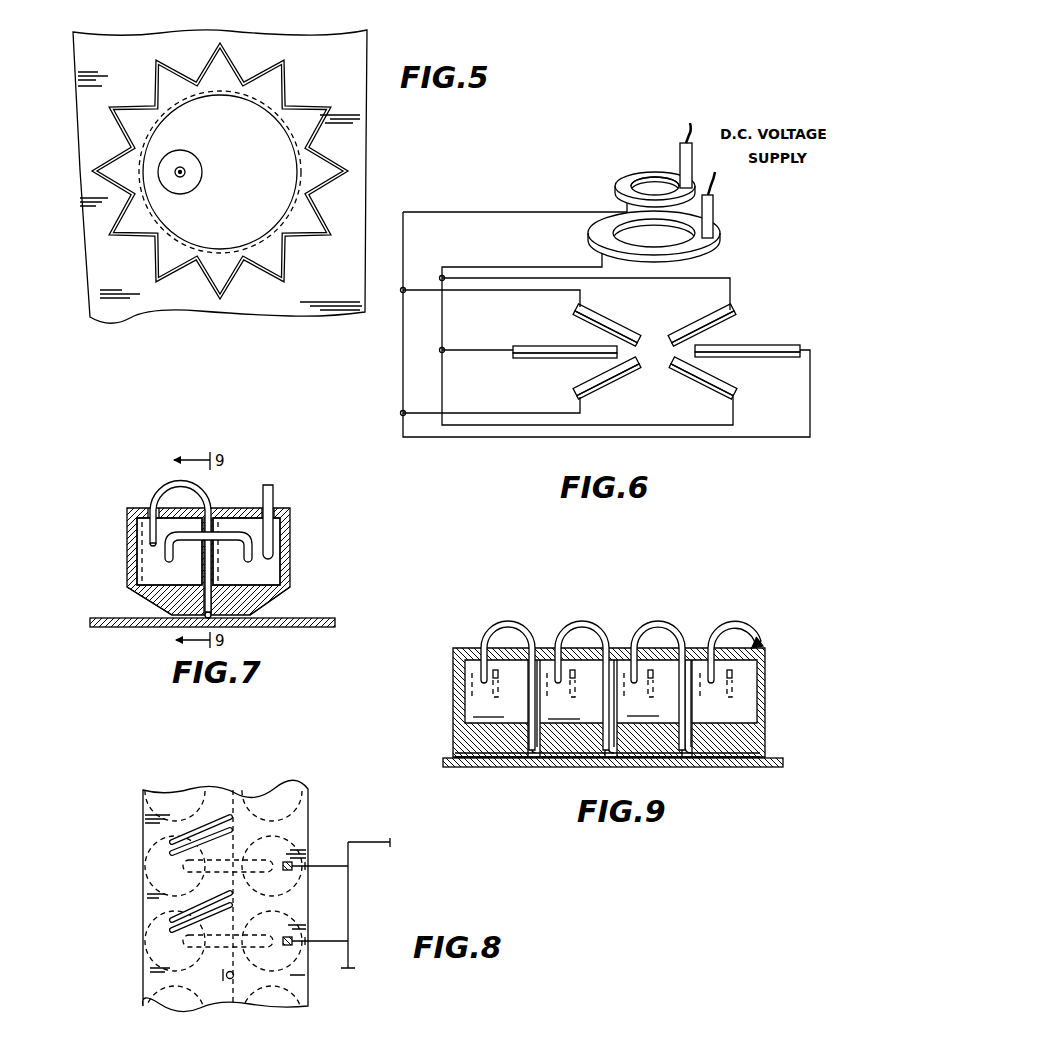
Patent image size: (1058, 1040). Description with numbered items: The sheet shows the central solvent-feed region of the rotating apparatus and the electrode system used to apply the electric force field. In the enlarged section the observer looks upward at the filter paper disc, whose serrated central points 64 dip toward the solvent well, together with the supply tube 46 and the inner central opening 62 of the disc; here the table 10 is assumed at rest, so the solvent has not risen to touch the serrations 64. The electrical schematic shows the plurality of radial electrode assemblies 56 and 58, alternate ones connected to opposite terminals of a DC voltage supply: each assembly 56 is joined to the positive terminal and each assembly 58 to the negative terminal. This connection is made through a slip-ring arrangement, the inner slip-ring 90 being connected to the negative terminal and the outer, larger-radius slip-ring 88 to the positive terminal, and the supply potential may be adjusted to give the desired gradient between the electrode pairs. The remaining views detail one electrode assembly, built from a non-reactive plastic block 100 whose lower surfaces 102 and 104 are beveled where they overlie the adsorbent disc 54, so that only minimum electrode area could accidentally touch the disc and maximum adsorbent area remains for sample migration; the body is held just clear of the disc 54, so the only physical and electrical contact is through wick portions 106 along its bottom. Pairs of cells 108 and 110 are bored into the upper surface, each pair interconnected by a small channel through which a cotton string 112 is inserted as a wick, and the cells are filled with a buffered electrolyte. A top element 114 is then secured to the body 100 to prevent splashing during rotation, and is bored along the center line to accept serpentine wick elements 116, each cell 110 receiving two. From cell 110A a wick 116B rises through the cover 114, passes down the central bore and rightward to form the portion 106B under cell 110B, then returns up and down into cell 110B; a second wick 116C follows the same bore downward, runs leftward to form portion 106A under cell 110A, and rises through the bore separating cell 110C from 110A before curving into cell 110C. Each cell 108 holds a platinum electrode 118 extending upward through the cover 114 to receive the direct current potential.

In FIG. 5, the table 10 is at (123, 293).
In FIG. 5, the supply tube 46 is at (188, 172).
In FIG. 5, the inner central opening 62 is at (260, 240).
In FIG. 5, the serrated central points 64 is at (267, 82).
In FIG. 6, the radial electrode assembly 56 is at (548, 341).
In FIG. 6, the radial electrode assembly 58 is at (760, 340).
In FIG. 6, the outer slip-ring 88 is at (707, 245).
In FIG. 6, the inner slip-ring 90 is at (622, 182).
In FIG. 7, the adsorbent disc 54 is at (318, 627).
In FIG. 7, the plastic block 100 is at (130, 548).
In FIG. 7, the beveled lower surface 102 is at (147, 603).
In FIG. 7, the beveled lower surface 104 is at (272, 605).
In FIG. 7, the wick portion 106 is at (225, 618).
In FIG. 9, the wick portion 106A is at (570, 757).
In FIG. 9, the wick portion 106B is at (652, 757).
In FIG. 7, the cell 108 is at (268, 575).
In FIG. 9, the cell 108 is at (609, 702).
In FIG. 8, the cell 108 is at (308, 832).
In FIG. 7, the cell 110 is at (150, 575).
In FIG. 9, the cell 110A is at (566, 694).
In FIG. 8, the cell 110A is at (142, 890).
In FIG. 9, the cell 110B is at (645, 693).
In FIG. 8, the cell 110B is at (135, 958).
In FIG. 9, the cell 110C is at (491, 693).
In FIG. 8, the cell 110C is at (168, 813).
In FIG. 7, the cotton string 112 is at (230, 533).
In FIG. 9, the cotton string 112 is at (747, 687).
In FIG. 8, the cotton string 112 is at (140, 912).
In FIG. 7, the top element 114 is at (140, 508).
In FIG. 9, the top element 114 is at (750, 645).
In FIG. 7, the wick element 116 is at (168, 490).
In FIG. 9, the wick 116B is at (562, 638).
In FIG. 8, the wick 116B is at (173, 838).
In FIG. 9, the wick 116C is at (485, 632).
In FIG. 8, the wick 116C is at (173, 852).
In FIG. 7, the platinum electrode 118 is at (272, 550).
In FIG. 8, the platinum electrode 118 is at (290, 943).